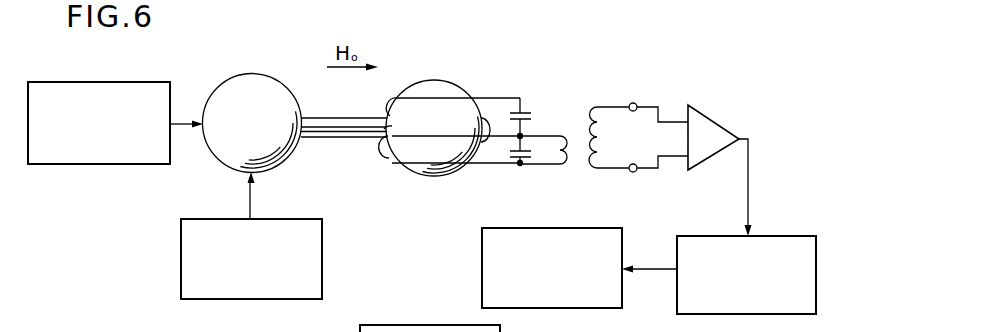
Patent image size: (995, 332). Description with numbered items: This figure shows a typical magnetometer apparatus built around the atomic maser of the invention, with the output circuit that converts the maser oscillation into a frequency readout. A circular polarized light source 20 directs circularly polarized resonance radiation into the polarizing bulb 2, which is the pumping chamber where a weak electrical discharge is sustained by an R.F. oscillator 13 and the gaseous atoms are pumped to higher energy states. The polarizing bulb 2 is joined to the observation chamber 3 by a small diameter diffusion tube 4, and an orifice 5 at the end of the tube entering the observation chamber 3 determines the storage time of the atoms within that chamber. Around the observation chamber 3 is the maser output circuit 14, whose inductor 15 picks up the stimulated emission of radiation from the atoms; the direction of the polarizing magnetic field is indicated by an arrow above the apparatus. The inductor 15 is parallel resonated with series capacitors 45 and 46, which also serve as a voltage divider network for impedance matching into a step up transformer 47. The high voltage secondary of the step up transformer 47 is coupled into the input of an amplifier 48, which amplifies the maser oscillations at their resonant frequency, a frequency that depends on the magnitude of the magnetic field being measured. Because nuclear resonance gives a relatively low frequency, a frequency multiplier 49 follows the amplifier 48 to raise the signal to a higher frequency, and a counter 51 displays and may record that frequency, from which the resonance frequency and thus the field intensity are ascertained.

The circularly polarized resonance radiation source 20 is at (138, 165).
The polarizing bulb 2 is at (273, 134).
The diffusion tube 4 is at (343, 138).
The orifice 5 is at (396, 128).
The observation chamber 3 is at (455, 139).
The inductor 15 is at (448, 98).
The maser output circuit 14 is at (474, 172).
The capacitor 45 is at (527, 110).
The capacitor 46 is at (527, 158).
The step up transformer 47 is at (575, 165).
The amplifier 48 is at (723, 122).
The frequency multiplier 49 is at (750, 314).
The counter 51 is at (586, 308).
The R.F. oscillator 13 is at (267, 299).